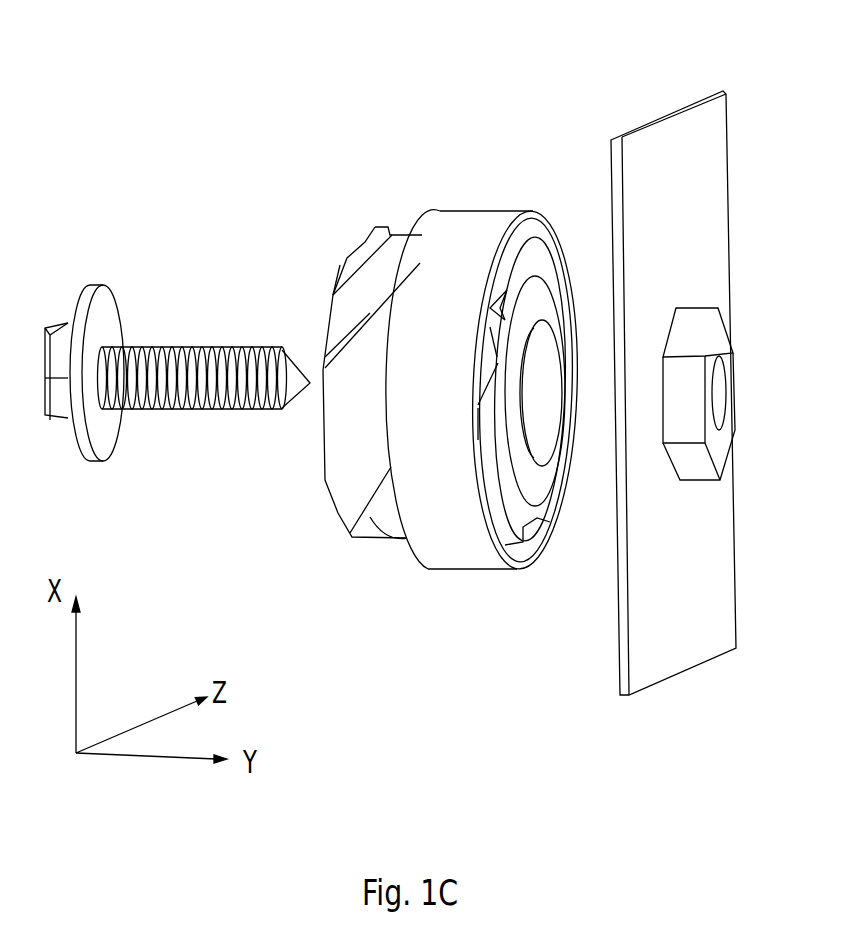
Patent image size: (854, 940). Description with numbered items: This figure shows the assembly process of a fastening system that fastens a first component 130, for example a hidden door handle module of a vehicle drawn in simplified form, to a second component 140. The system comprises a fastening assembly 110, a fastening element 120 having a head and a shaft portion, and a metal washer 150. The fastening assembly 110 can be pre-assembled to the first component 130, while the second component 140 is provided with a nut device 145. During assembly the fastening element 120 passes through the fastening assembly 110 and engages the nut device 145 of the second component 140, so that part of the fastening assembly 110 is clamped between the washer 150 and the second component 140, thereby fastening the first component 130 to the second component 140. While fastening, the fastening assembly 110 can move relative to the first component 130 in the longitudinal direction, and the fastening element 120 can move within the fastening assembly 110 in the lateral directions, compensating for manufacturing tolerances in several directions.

The fastening assembly 110 is at (393, 248).
The fastening element 120 is at (157, 348).
The first component 130 is at (460, 232).
The second component 140 is at (685, 128).
The nut device 145 is at (724, 360).
The metal washer 150 is at (95, 292).